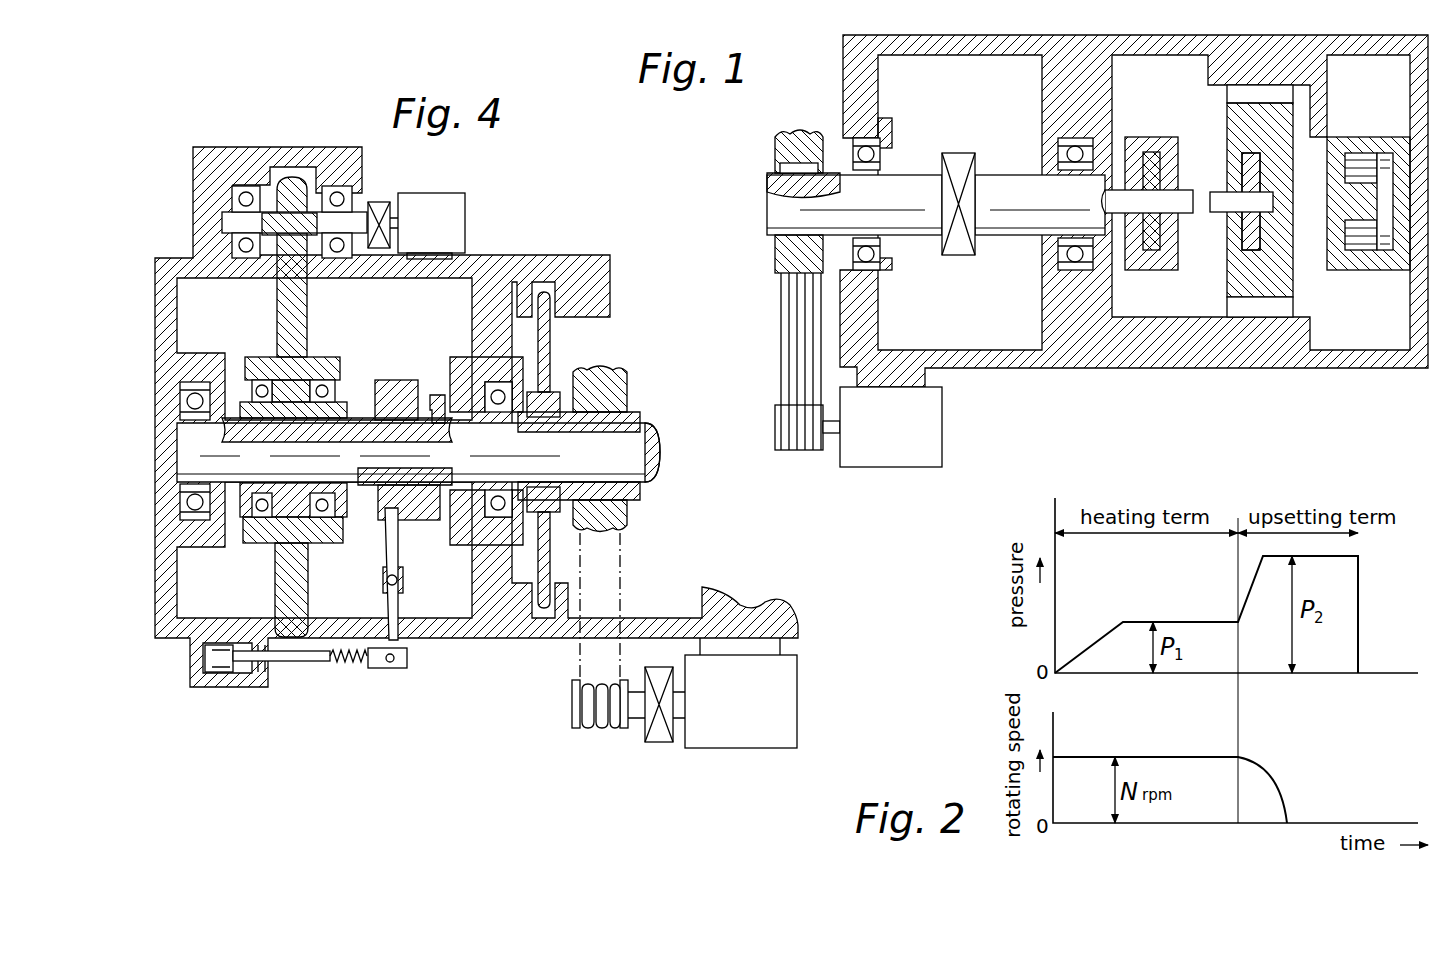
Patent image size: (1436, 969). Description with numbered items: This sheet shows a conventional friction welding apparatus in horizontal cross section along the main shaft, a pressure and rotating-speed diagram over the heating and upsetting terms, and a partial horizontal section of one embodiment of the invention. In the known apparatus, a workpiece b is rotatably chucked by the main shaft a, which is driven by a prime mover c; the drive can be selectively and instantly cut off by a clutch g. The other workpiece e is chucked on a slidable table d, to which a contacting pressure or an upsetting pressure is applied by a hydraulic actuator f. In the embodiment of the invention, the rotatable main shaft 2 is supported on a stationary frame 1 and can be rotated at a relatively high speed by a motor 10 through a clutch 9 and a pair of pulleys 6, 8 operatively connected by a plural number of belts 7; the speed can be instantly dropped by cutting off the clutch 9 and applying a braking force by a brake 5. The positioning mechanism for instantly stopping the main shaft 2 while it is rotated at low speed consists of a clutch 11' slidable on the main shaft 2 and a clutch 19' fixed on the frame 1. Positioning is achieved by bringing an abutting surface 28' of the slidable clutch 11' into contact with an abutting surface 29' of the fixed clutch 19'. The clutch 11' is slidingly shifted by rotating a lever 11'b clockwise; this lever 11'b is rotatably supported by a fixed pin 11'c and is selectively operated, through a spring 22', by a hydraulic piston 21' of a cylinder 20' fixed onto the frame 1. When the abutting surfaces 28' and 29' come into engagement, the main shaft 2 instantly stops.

In FIG. 4, the stationary frame 1 is at (622, 307).
In FIG. 4, the main shaft 2 is at (655, 422).
In FIG. 4, the brake 5 is at (552, 337).
In FIG. 4, the pulley 6 is at (604, 368).
In FIG. 4, the belts 7 is at (622, 558).
In FIG. 4, the pulley 8 is at (572, 713).
In FIG. 4, the clutch 9 is at (655, 745).
In FIG. 4, the motor 10 is at (733, 750).
In FIG. 4, the clutch 11' is at (329, 407).
In FIG. 4, the abutting surface 29' is at (426, 385).
In FIG. 4, the clutch 19' is at (431, 456).
In FIG. 4, the abutting surface 28' is at (411, 525).
In FIG. 4, the lever 11'b is at (368, 574).
In FIG. 4, the fixed pin 11'c is at (425, 593).
In FIG. 4, the cylinder 20' is at (238, 683).
In FIG. 4, the hydraulic piston 21' is at (282, 678).
In FIG. 4, the spring 22' is at (368, 678).
In FIG. 1, the main shaft a is at (1013, 240).
In FIG. 1, the workpiece b is at (1184, 192).
In FIG. 1, the prime mover c is at (943, 432).
In FIG. 1, the slidable table d is at (1298, 124).
In FIG. 1, the workpiece e is at (1218, 212).
In FIG. 1, the hydraulic actuator f is at (1380, 137).
In FIG. 1, the clutch g is at (960, 155).